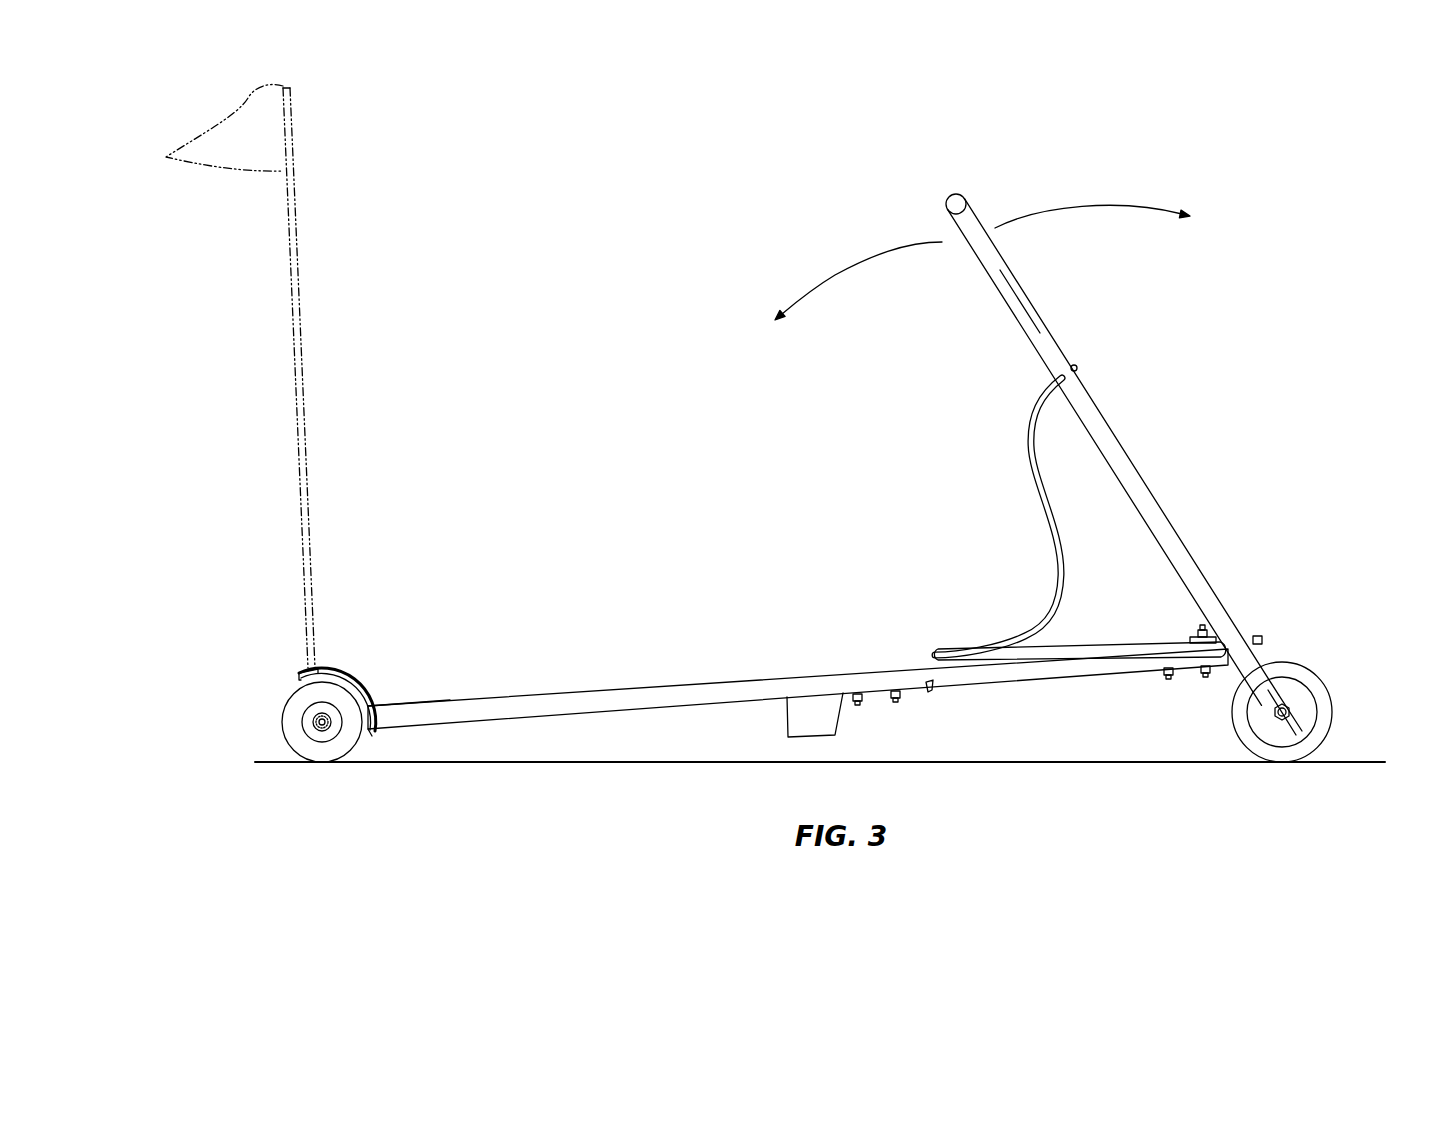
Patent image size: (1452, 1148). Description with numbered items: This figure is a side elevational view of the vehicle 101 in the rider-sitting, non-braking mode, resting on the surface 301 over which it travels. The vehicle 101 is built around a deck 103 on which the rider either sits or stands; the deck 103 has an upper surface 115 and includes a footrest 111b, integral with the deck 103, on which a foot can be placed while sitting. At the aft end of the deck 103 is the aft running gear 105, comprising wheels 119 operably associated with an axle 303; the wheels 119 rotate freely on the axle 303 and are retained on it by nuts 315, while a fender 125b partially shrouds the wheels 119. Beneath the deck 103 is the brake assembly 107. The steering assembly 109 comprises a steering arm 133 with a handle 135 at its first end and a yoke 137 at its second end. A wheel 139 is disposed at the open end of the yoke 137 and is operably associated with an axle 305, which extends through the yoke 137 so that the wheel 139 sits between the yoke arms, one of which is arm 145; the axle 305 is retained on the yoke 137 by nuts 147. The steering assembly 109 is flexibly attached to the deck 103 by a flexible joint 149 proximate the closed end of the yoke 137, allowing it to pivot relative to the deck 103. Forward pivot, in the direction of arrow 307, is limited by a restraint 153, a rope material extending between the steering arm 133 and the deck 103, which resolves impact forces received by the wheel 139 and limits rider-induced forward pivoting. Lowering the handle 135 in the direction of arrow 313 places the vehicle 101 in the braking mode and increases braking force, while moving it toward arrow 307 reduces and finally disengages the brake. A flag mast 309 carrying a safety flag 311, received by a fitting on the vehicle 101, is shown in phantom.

The vehicle 101 is at (655, 316).
The deck 103 is at (528, 703).
The aft running gear 105 is at (350, 755).
The brake assembly 107 is at (785, 742).
The steering assembly 109 is at (1047, 312).
The footrest 111b is at (1177, 650).
The upper surface 115 is at (400, 705).
The wheels 119 is at (305, 745).
The fender 125b is at (318, 666).
The steering arm 133 is at (1022, 311).
The handle 135 is at (960, 196).
The yoke 137 is at (1280, 698).
The wheel 139 is at (1318, 733).
The arm of yoke 145 is at (1293, 722).
The nuts 147 is at (1274, 713).
The flexible joint 149 is at (1247, 626).
The restraint 153 is at (1028, 465).
The surface 301 is at (900, 760).
The axle 303 is at (325, 728).
The axle 305 is at (1282, 716).
The arrow 307 is at (1050, 208).
The flag mast 309 is at (294, 292).
The safety flag 311 is at (243, 150).
The arrow 313 is at (838, 268).
The nuts 315 is at (320, 720).